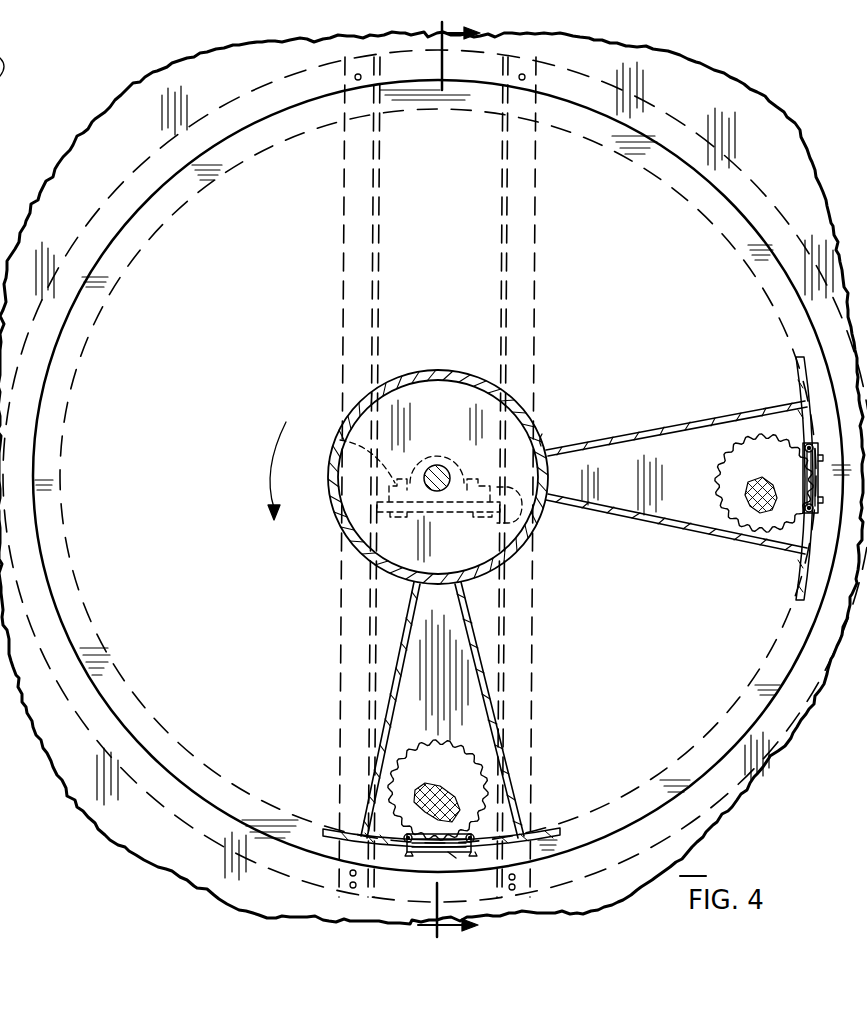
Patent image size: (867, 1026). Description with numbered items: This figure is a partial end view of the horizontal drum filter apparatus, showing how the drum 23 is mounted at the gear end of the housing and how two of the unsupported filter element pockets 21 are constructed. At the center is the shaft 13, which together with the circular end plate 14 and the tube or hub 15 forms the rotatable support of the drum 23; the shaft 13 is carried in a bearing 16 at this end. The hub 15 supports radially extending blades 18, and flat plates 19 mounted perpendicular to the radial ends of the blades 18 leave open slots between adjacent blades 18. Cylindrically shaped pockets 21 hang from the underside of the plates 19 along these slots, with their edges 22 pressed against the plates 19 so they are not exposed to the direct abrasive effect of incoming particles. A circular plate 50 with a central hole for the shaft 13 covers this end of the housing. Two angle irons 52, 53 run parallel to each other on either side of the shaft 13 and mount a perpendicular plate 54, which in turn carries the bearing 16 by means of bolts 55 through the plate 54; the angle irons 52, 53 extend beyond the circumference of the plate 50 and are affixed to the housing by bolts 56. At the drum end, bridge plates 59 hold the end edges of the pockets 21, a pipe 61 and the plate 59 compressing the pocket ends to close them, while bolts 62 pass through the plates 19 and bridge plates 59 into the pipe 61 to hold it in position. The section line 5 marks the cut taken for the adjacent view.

The section line 5- 5 is at (449, 479).
The shaft 13 is at (449, 469).
The circular end plate 14 is at (430, 392).
The tube or hub 15 is at (542, 434).
The bearing 16 is at (433, 452).
The blades 18 is at (651, 428).
The flat plates 19 is at (800, 357).
The pockets 21 is at (470, 756).
The edges of the pockets 22 is at (373, 837).
The drum 23 is at (729, 586).
The circular plate 50 is at (666, 254).
The angle iron 52 is at (538, 167).
The angle iron 53 is at (344, 190).
The perpendicular plate 54 is at (450, 513).
The bolts 55 is at (340, 440).
The bolts 56 is at (355, 77).
The bridge plates 59 is at (437, 855).
The pipe 61 is at (426, 795).
The bolts 62 is at (452, 855).